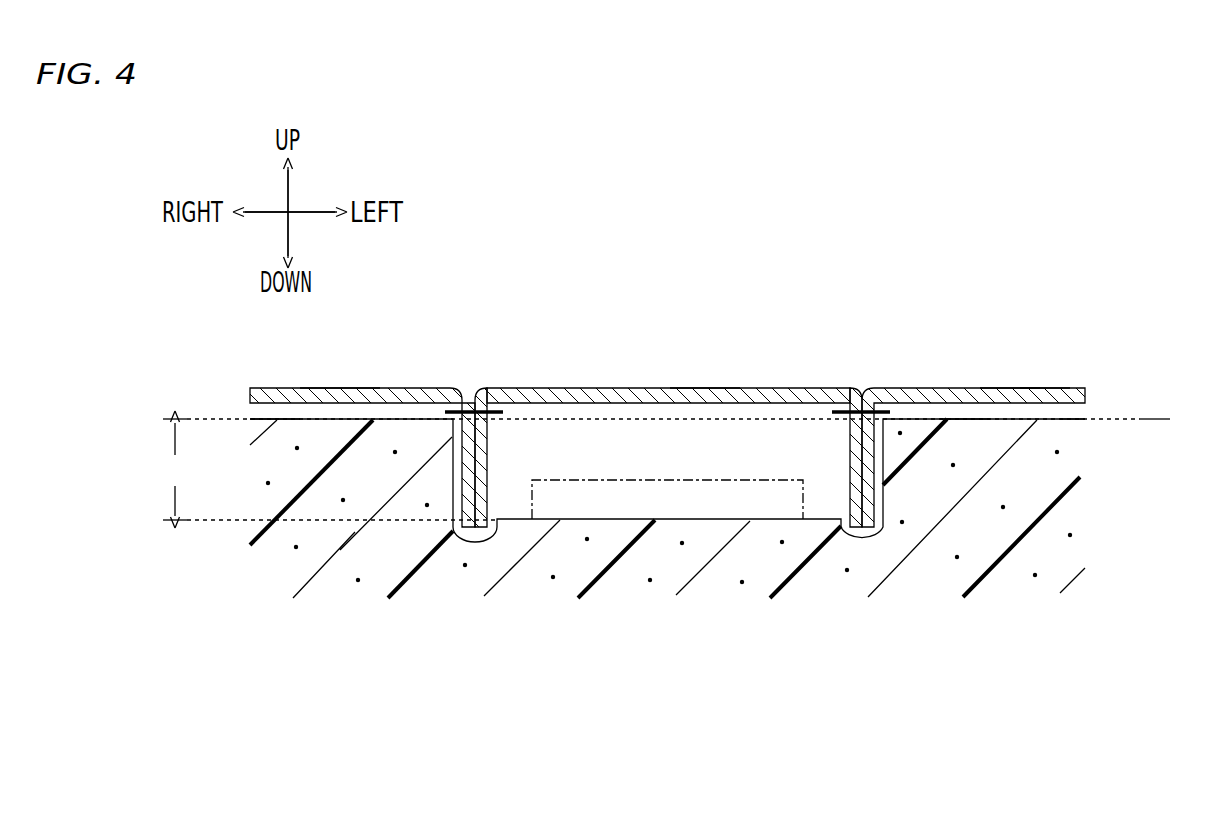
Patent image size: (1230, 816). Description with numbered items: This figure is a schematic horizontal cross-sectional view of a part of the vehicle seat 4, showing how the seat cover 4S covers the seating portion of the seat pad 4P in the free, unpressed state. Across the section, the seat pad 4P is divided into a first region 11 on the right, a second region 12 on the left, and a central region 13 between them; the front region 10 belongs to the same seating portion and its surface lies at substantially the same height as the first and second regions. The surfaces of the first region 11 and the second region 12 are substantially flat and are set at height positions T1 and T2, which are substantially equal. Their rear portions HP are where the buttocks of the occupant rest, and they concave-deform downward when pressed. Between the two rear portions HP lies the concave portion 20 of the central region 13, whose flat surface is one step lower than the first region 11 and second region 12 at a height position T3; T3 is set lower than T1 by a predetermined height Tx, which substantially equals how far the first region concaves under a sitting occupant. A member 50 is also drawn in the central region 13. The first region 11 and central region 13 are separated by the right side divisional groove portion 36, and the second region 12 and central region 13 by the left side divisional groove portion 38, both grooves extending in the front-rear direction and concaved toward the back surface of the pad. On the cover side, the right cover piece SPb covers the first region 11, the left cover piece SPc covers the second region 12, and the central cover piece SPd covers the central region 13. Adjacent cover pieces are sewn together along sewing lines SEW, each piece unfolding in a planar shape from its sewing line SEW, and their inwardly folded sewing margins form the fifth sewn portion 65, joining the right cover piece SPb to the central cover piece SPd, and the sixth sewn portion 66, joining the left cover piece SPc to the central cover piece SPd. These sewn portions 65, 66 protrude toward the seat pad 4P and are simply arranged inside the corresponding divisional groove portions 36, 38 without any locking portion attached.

The vehicle seat 4 is at (797, 260).
The front region 10 is at (596, 418).
The first region 11 is at (453, 530).
The second region 12 is at (883, 530).
The central region 13 is at (841, 530).
The concave portion 20 is at (675, 516).
The right side divisional groove portion 36 is at (453, 528).
The left side divisional groove portion 38 is at (880, 530).
The heater / sensor member 50 is at (763, 480).
The fifth sewn portion 65 is at (487, 458).
The sixth sewn portion 66 is at (850, 458).
The sewing line SEW is at (462, 412).
The rear portion HP is at (296, 410).
The right cover piece SPb is at (338, 388).
The left cover piece SPc is at (1007, 388).
The central cover piece SPd is at (703, 388).
The seat pad 4P is at (963, 414).
The seat cover 4S is at (1044, 382).
The height position of the surface of the first region T1 is at (636, 418).
The height position of the surface of the second region T2 is at (1169, 418).
The height position of the concave portion T3 is at (314, 518).
The predetermined height Tx is at (174, 469).